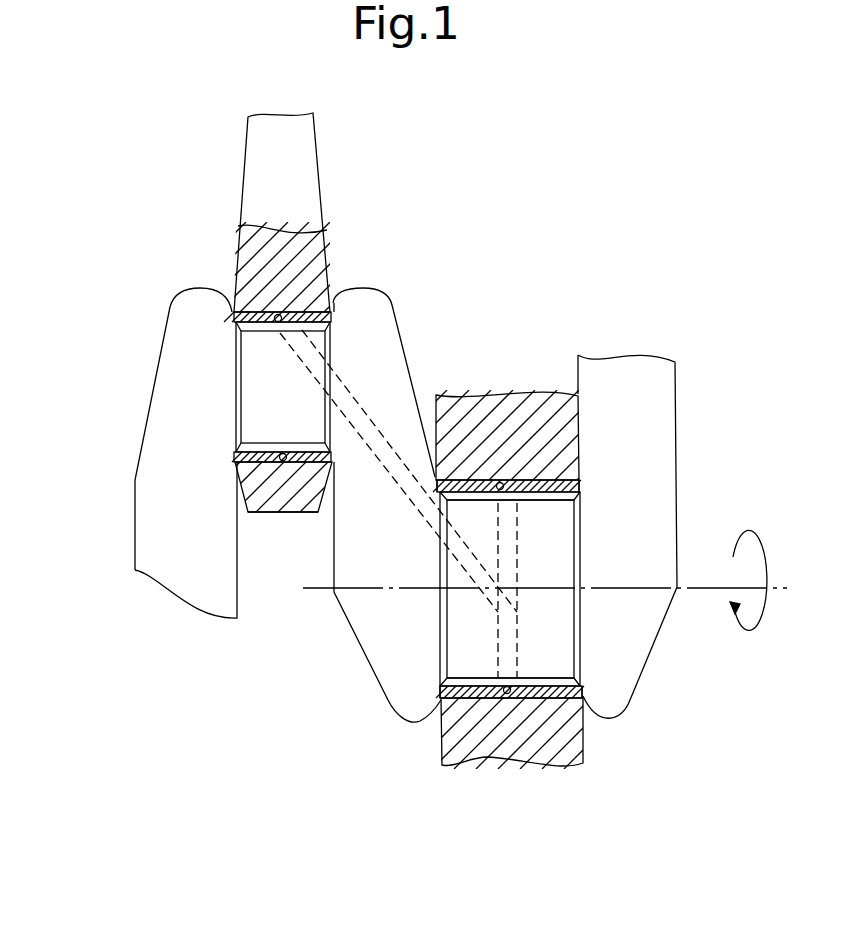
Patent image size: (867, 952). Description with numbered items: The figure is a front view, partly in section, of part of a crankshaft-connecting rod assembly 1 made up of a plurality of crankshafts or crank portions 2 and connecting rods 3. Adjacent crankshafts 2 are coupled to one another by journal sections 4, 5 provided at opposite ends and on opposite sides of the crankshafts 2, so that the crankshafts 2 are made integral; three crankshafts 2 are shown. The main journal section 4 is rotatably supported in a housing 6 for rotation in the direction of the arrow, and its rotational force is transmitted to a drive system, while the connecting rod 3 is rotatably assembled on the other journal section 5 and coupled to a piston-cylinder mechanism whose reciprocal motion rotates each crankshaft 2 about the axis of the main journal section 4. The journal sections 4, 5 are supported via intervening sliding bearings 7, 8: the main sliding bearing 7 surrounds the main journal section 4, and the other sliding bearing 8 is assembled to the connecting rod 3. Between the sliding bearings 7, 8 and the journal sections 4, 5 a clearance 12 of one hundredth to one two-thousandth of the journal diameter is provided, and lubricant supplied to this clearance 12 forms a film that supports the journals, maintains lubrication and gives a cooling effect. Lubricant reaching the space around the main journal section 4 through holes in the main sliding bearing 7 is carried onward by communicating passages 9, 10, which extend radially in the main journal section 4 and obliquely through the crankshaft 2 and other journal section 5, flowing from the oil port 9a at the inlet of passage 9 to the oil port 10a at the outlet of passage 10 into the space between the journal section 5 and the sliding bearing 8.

The assembly 1 is at (377, 265).
The crankshaft 2 is at (155, 517).
The connecting rod 3 is at (257, 158).
The main journal section 4 is at (507, 662).
The journal section 5 is at (250, 398).
The housing 6 is at (463, 418).
The main sliding bearing 7 is at (520, 487).
The sliding bearing 8 is at (263, 513).
The communicating passage 9 is at (507, 610).
The oil port 9a is at (505, 507).
The communicating passage 10 is at (412, 505).
The oil port 10a is at (307, 303).
The clearance 12 is at (260, 332).